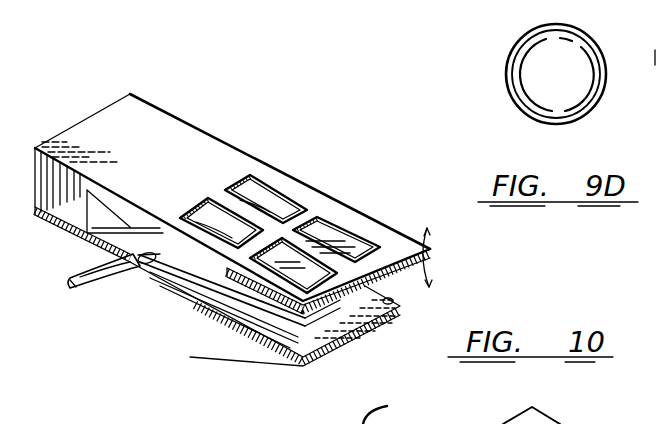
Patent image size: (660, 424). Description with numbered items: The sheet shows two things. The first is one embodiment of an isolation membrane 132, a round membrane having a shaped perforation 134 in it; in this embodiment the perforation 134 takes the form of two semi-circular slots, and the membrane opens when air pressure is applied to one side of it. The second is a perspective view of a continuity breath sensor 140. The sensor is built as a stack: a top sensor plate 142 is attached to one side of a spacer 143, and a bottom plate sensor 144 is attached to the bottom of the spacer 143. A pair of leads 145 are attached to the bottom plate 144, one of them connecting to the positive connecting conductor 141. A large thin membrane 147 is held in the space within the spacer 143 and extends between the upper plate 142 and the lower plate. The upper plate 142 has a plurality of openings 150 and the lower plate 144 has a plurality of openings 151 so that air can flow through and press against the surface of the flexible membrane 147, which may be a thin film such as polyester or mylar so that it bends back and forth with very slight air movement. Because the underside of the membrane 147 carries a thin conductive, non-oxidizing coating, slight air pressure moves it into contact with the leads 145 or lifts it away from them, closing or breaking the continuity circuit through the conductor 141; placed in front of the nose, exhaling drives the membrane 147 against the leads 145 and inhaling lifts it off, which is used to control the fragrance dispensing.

In FIG. 9D, the isolation membrane 132 is at (532, 67).
In FIG. 9D, the perforation 134 is at (571, 46).
In FIG. 10, the continuity breath sensor 140 is at (243, 252).
In FIG. 10, the connecting conductor 141 is at (98, 283).
In FIG. 10, the top sensor plate 142 is at (282, 183).
In FIG. 10, the spacer 143 is at (72, 213).
In FIG. 10, the bottom plate sensor 144 is at (260, 340).
In FIG. 10, the leads 145 is at (215, 318).
In FIG. 10, the thin membrane 147 is at (434, 246).
In FIG. 10, the openings 150 is at (332, 240).
In FIG. 10, the openings 151 is at (380, 304).